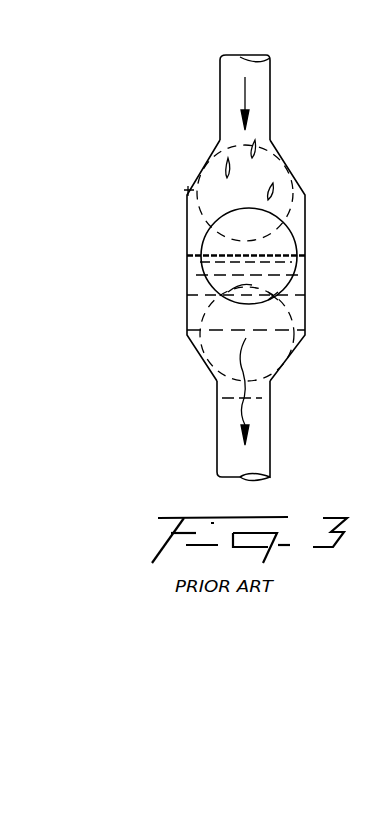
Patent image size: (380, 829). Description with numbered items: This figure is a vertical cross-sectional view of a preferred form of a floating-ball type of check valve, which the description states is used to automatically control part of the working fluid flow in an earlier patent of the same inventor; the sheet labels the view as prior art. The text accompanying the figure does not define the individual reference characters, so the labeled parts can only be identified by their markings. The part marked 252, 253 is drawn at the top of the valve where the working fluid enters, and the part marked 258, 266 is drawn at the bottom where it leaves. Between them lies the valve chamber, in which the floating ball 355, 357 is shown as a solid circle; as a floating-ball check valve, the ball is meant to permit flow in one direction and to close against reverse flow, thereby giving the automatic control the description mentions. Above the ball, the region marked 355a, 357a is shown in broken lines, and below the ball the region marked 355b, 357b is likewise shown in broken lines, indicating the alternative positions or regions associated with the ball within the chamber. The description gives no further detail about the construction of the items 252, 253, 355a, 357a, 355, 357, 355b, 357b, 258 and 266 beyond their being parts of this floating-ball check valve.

The inlet tube 252 is at (290, 97).
The inlet tube 253 is at (272, 93).
The upper chamber of check valve 355a is at (190, 190).
The upper chamber of check valve 357a is at (186, 190).
The check valve ball 355 is at (182, 263).
The check valve ball 357 is at (208, 282).
The lower chamber of check valve 355b is at (178, 356).
The lower chamber of check valve 357b is at (197, 350).
The outlet tube 258 is at (180, 431).
The outlet tube 266 is at (217, 435).